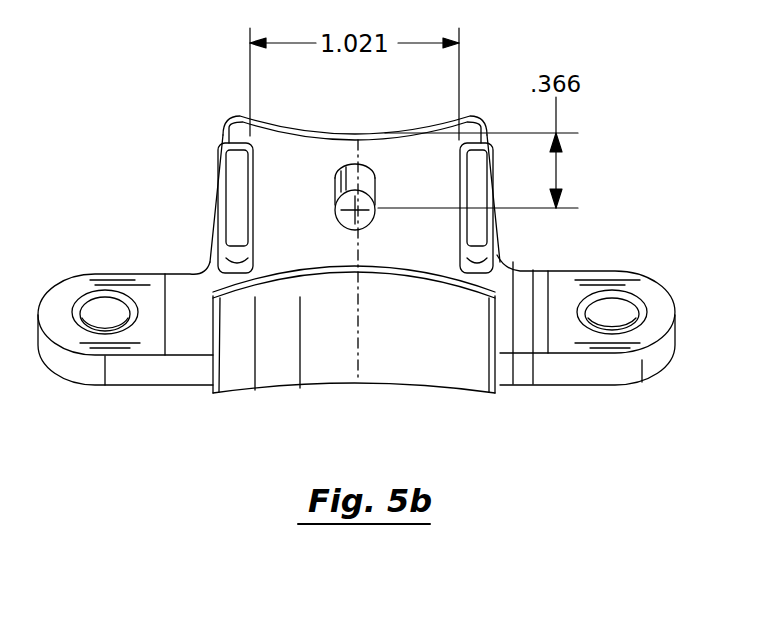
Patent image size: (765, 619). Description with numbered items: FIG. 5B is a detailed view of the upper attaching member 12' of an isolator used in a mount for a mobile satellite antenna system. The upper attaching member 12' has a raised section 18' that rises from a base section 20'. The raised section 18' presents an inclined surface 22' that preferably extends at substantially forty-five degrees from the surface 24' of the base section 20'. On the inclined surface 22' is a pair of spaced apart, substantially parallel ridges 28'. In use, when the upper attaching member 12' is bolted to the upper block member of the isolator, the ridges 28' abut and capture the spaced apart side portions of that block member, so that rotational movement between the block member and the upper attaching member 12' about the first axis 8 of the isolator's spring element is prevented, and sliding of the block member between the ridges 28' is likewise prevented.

The upper attaching member 12' is at (269, 264).
The raised section 18' is at (355, 105).
The base section 20' is at (593, 284).
The inclined surface 22' is at (401, 260).
The surface of the base section 24' is at (587, 383).
The ridges 28' is at (355, 208).
The first axis 8 is at (355, 210).